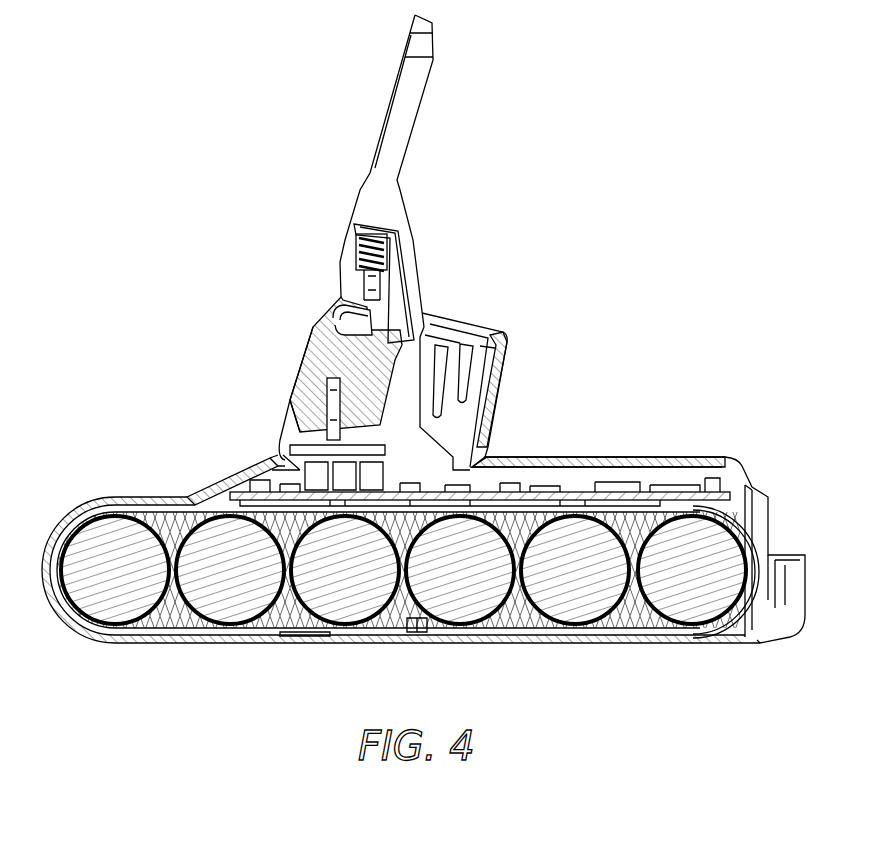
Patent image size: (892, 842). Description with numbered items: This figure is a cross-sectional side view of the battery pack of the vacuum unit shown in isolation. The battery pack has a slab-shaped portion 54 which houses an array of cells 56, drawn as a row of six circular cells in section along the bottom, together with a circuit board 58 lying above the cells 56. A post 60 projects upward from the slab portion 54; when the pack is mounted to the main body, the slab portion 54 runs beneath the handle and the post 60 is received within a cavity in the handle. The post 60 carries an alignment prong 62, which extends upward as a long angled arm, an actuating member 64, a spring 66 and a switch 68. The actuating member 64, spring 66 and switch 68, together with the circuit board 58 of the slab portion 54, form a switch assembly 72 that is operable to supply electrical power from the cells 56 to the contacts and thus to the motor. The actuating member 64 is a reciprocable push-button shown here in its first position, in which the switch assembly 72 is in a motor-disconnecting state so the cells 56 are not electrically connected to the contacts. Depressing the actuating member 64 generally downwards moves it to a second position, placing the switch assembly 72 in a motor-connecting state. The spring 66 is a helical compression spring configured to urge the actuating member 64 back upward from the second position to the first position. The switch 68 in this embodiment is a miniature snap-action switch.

The slab-shaped portion 54 is at (734, 430).
The cells 56 is at (118, 603).
The circuit board 58 is at (587, 492).
The post 60 is at (533, 377).
The alignment prong 62 is at (414, 83).
The actuating member 64 is at (393, 233).
The spring 66 is at (355, 262).
The switch 68 is at (377, 348).
The switch assembly 72 is at (443, 270).